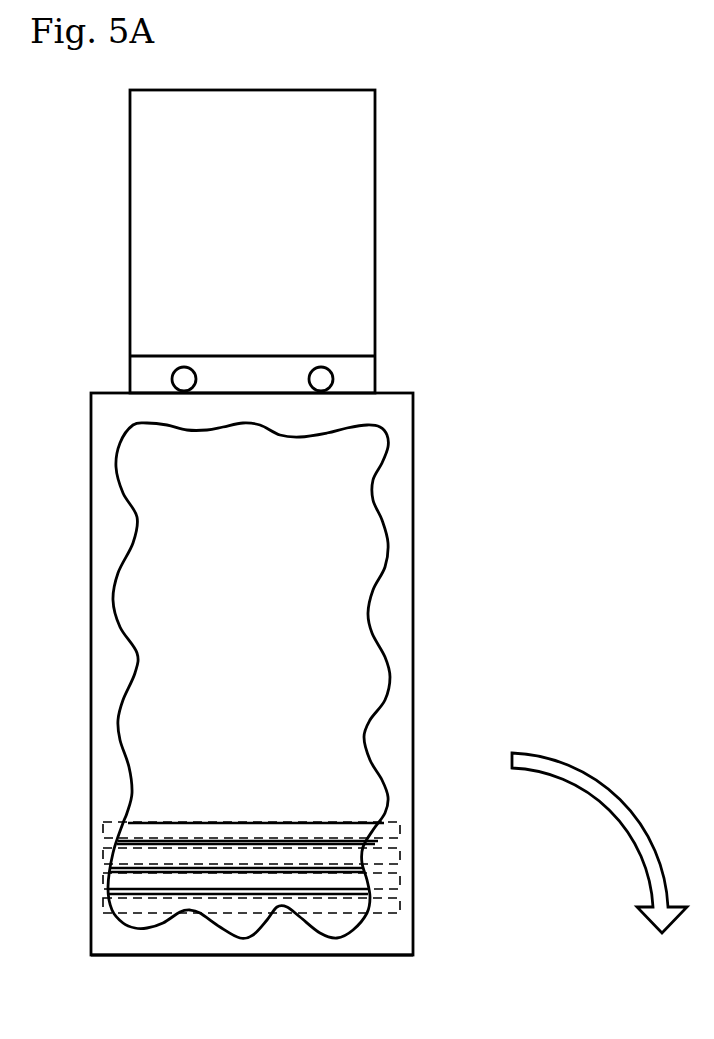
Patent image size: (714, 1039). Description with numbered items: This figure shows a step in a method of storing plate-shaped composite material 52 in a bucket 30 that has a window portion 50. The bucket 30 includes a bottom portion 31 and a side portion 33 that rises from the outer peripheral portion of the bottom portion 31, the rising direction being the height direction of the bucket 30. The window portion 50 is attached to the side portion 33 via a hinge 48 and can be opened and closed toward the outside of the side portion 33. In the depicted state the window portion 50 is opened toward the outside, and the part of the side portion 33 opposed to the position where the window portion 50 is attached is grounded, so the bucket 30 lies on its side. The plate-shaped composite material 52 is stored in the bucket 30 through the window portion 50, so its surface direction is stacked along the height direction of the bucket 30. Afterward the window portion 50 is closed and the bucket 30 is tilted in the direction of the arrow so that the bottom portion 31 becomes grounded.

The window portion 50 is at (375, 212).
The hinge 48 is at (375, 375).
The plate-shaped composite material 52 is at (354, 828).
The bucket 30 is at (338, 698).
The bottom portion 31 is at (417, 907).
The side portion 33 is at (355, 957).